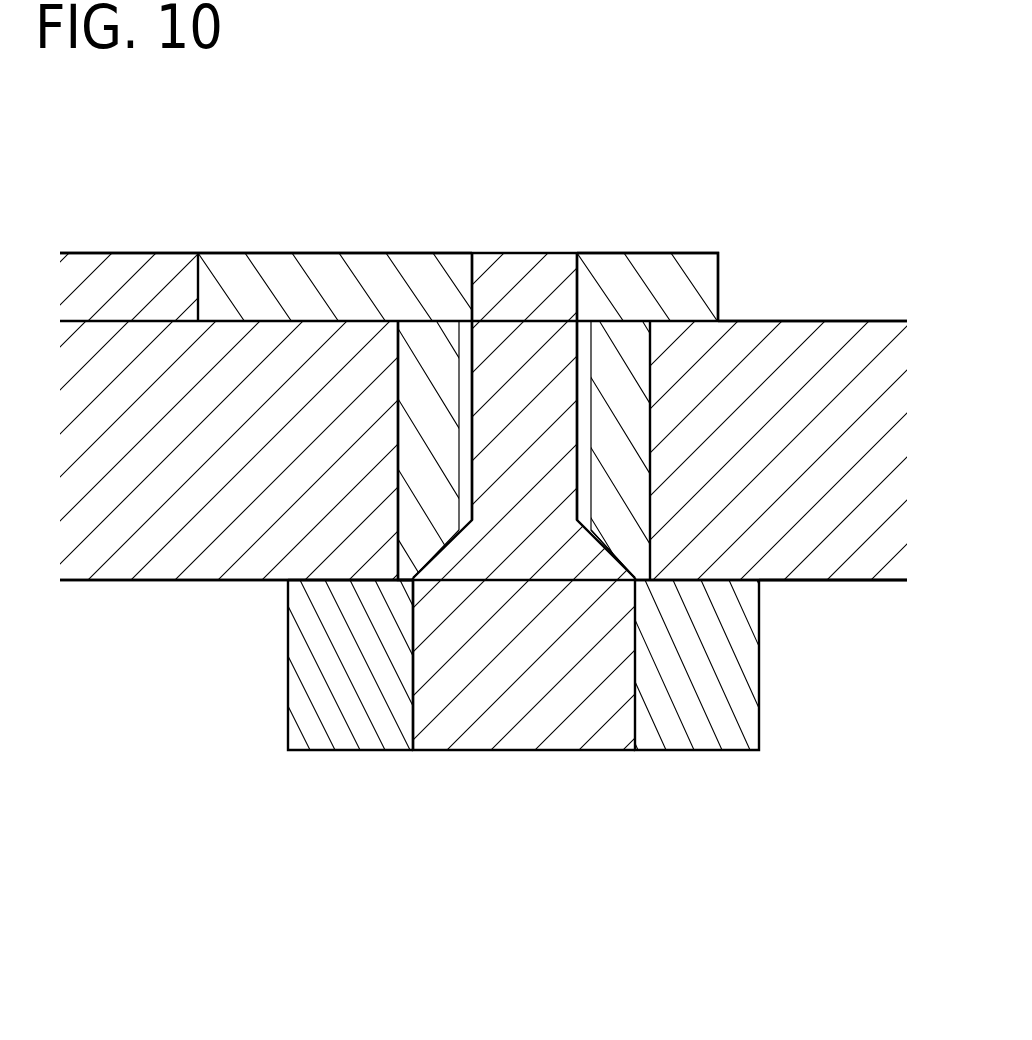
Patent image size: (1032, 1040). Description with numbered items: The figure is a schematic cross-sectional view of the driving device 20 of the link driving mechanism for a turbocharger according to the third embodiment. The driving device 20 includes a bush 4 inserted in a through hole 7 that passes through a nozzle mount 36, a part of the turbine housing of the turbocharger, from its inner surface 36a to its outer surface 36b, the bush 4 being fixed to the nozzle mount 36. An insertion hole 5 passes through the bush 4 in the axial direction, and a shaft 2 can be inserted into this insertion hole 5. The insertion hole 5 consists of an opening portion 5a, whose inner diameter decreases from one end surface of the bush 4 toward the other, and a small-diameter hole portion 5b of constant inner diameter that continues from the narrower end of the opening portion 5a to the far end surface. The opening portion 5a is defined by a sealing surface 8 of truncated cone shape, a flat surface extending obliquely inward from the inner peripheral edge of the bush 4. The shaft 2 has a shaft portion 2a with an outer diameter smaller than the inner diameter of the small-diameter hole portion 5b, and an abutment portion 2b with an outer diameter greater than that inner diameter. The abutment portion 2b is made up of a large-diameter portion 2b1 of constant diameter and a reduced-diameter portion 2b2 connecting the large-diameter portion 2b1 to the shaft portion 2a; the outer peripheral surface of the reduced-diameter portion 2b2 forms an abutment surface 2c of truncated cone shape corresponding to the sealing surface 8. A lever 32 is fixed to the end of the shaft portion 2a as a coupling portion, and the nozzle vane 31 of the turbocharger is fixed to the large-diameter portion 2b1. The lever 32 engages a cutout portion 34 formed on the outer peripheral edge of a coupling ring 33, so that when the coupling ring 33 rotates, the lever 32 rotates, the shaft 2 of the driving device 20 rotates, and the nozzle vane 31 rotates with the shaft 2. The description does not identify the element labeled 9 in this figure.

The shaft 2 is at (516, 576).
The shaft portion 2a is at (513, 433).
The abutment portion 2b is at (623, 705).
The large-diameter portion 2b1 is at (618, 680).
The reduced-diameter portion 2b2 is at (650, 550).
The abutment surface 2c is at (650, 530).
The bush 4 is at (413, 537).
The insertion hole 5 is at (322, 702).
The opening portion 5a is at (413, 598).
The small-diameter hole portion 5b is at (455, 600).
The through hole 7 is at (645, 540).
The sealing surface 8 is at (580, 549).
The hole wall 9 is at (460, 466).
The driving device 20 is at (804, 699).
The nozzle vane 31 is at (350, 750).
The lever 32 is at (232, 262).
The coupling ring 33 is at (73, 262).
The cutout portion 34 is at (200, 305).
The nozzle mount 36 is at (881, 547).
The inner surface 36a is at (829, 580).
The outer surface 36b is at (891, 321).